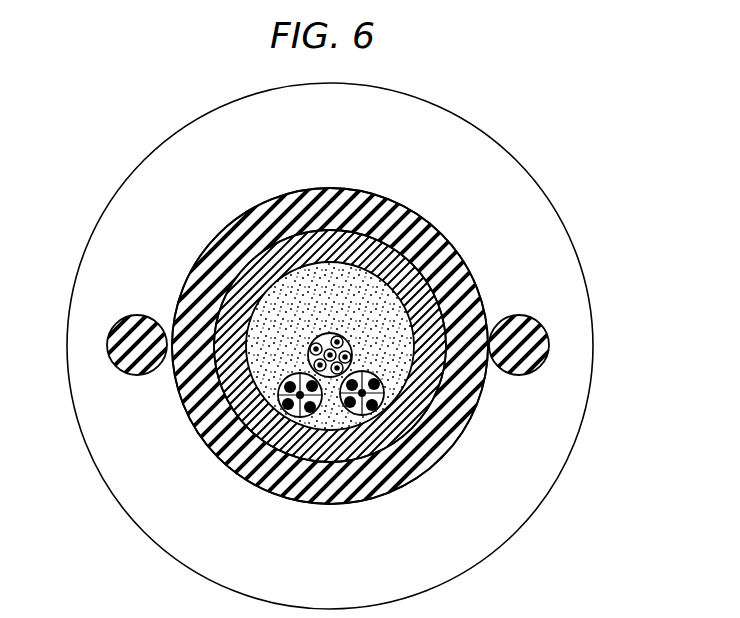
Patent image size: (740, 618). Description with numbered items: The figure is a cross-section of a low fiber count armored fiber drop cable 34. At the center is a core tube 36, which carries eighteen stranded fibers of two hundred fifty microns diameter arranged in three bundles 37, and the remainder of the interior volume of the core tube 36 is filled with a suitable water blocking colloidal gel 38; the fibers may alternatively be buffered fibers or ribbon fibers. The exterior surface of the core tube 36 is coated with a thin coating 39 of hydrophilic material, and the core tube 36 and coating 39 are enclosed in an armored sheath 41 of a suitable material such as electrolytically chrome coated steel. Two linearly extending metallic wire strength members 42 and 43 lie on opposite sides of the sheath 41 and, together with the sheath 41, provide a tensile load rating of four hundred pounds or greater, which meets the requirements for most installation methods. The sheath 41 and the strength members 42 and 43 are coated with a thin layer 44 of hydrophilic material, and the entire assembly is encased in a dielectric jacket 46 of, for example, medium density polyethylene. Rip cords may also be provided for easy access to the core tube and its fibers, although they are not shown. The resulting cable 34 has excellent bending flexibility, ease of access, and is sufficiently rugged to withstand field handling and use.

The armored drop cable 34 is at (551, 179).
The core tube 36 is at (431, 304).
The bundles 37 is at (331, 444).
The water blocking colloidal gel 38 is at (273, 292).
The coating of hydrophilic material 39 is at (252, 252).
The armored sheath 41 is at (278, 200).
The metallic wire strength member 42 is at (120, 340).
The metallic wire strength member 43 is at (537, 331).
The layer of hydrophilic material 44 is at (407, 210).
The dielectric jacket 46 is at (137, 510).